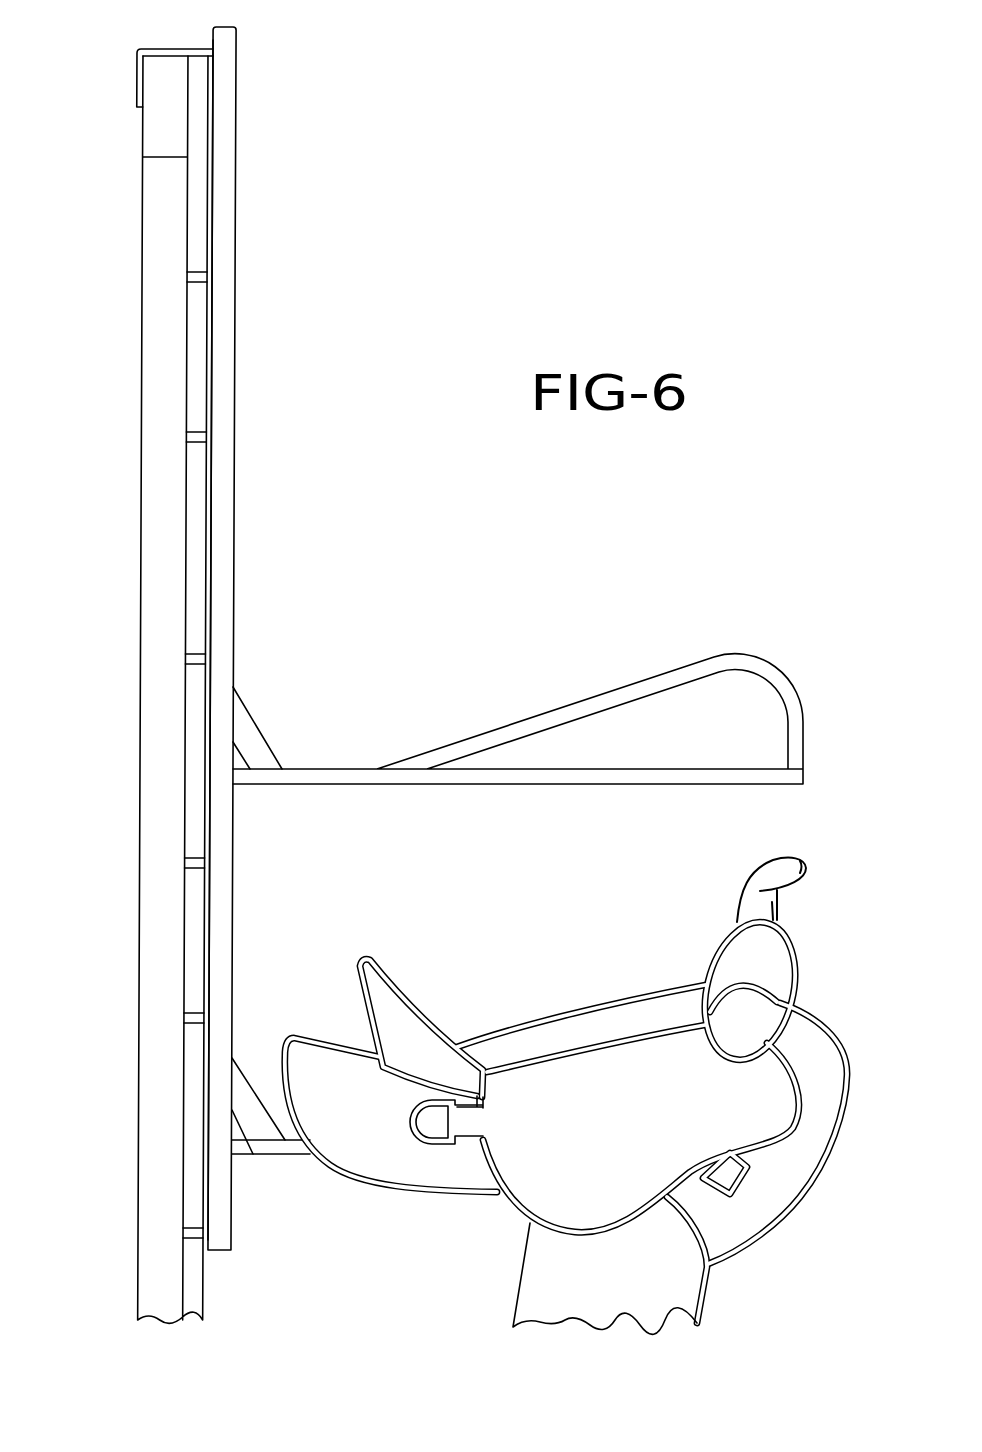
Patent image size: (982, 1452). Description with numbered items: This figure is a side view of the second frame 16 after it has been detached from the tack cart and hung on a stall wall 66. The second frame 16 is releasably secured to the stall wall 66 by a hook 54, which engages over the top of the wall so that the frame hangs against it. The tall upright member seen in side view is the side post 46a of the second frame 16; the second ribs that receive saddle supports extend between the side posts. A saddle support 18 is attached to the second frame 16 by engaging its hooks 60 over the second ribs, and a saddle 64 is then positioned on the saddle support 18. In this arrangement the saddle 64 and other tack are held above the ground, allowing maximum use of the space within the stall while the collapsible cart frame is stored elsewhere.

The second frame 16 is at (245, 196).
The saddle support 18 is at (476, 792).
The side post 46a is at (228, 252).
The hook 54 is at (166, 48).
The hooks 60 is at (250, 731).
The saddle 64 is at (803, 1030).
The stall wall 66 is at (156, 352).